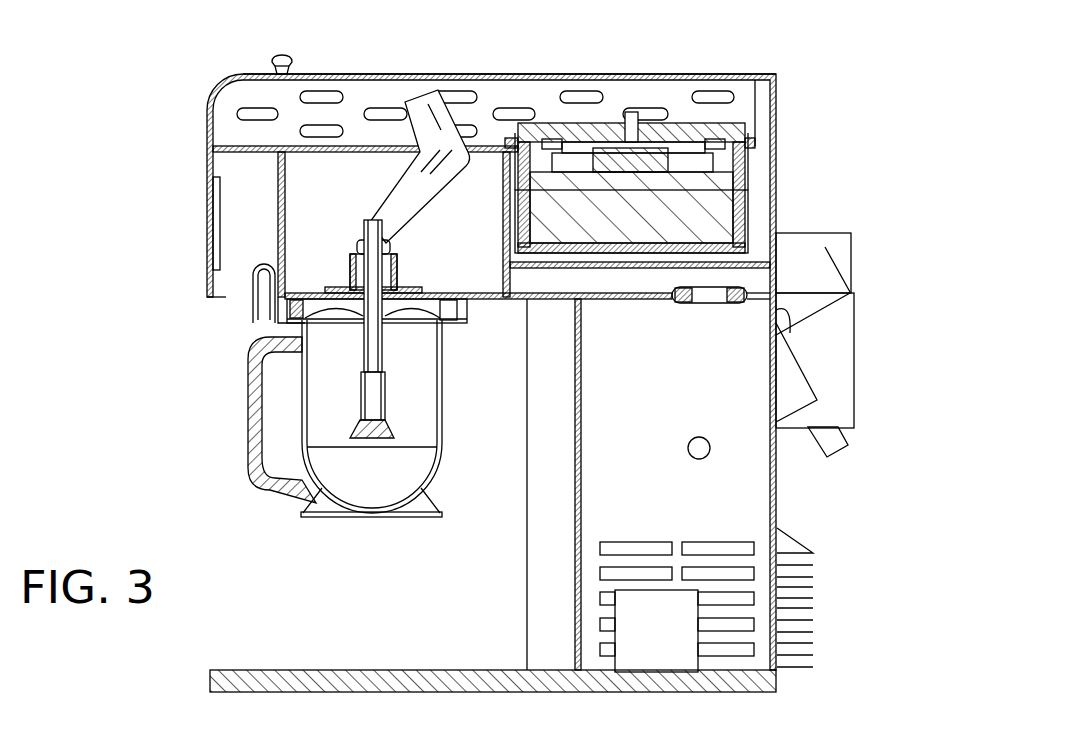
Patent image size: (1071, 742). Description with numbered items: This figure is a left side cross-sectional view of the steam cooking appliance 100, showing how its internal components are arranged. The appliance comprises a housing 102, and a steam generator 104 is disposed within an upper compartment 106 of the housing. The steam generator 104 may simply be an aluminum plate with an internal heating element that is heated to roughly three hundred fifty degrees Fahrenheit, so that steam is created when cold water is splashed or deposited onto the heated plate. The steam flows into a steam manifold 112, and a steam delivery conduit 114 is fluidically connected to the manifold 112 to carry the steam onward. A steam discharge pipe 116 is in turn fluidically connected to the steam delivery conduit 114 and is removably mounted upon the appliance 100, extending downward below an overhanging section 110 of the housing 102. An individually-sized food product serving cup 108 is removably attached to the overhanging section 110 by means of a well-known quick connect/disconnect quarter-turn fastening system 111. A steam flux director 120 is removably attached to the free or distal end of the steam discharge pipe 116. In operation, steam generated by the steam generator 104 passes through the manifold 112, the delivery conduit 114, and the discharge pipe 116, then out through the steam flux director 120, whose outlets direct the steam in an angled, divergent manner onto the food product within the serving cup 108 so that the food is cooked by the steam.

The cooking appliance 100 is at (806, 85).
The housing 102 is at (713, 75).
The steam generator 104 is at (672, 192).
The upper compartment 106 is at (760, 212).
The food product serving cup 108 is at (442, 420).
The overhanging section 110 is at (207, 232).
The quick connect/disconnect quarter-turn fastening system 111 is at (465, 312).
The steam manifold 112 is at (508, 98).
The steam delivery conduit 114 is at (412, 190).
The steam discharge pipe 116 is at (300, 322).
The steam flux director 120 is at (366, 403).